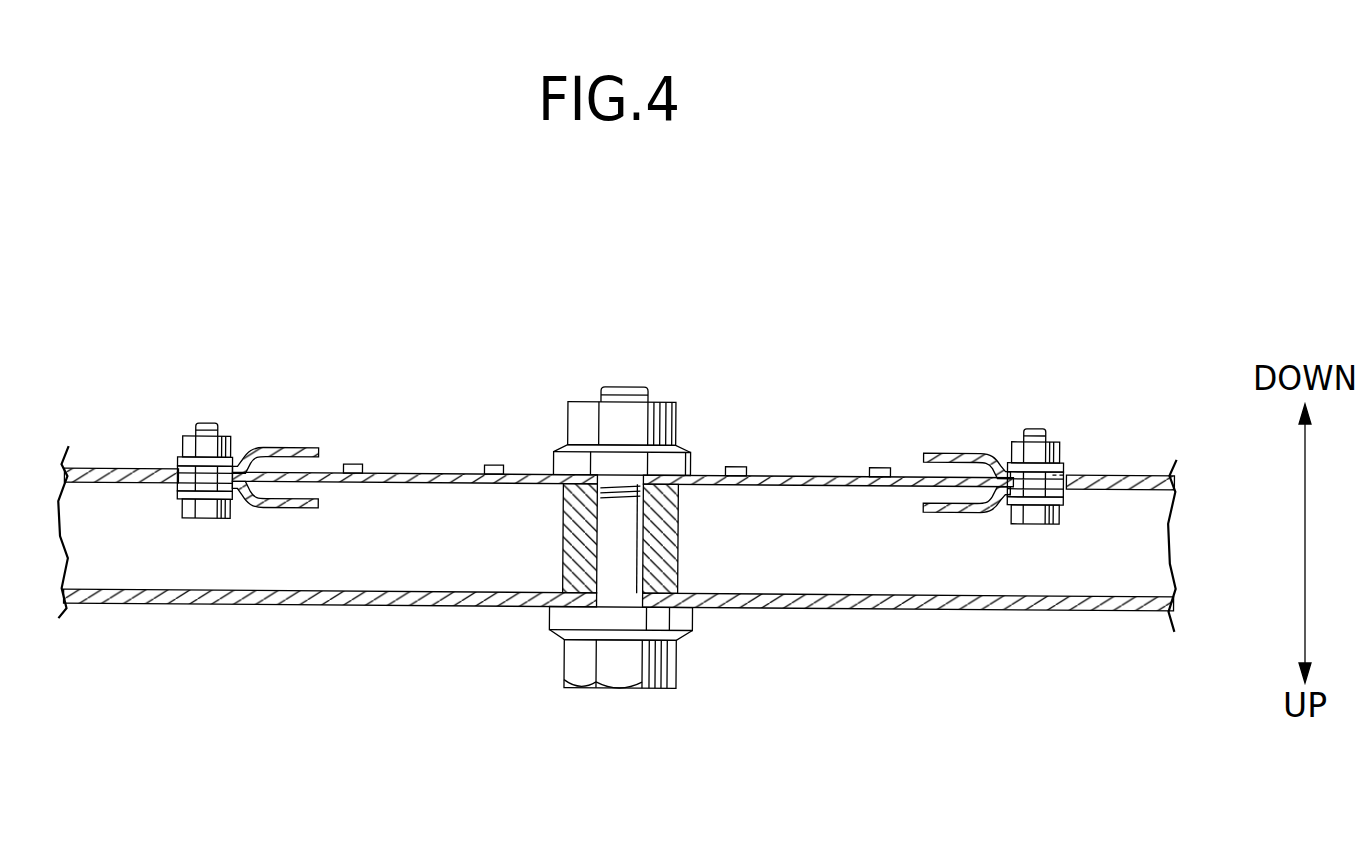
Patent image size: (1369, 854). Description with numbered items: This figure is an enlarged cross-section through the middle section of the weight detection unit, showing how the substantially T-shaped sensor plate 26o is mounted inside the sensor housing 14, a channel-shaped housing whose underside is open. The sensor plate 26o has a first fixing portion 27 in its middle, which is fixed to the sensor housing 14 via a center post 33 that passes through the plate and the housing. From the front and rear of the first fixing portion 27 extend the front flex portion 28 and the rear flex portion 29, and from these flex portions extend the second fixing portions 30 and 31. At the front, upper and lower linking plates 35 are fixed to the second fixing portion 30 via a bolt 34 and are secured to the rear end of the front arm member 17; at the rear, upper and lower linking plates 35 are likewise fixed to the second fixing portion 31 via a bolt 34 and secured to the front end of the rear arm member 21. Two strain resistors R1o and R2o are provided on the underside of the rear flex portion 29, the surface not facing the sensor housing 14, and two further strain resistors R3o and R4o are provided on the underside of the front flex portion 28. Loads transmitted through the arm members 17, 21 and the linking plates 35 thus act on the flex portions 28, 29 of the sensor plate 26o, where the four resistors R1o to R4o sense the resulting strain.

The sensor housing 14 is at (990, 607).
The front arm member 17 is at (1125, 475).
The rear arm member 21 is at (122, 478).
The sensor plate 26o is at (698, 486).
The first fixing portion 27 is at (592, 476).
The front flex portion 28 is at (847, 475).
The rear flex portion 29 is at (380, 475).
The front second fixing portion 30 is at (1058, 514).
The rear second fixing portion 31 is at (184, 514).
The center post 33 is at (563, 550).
The bolt 34 is at (202, 426).
The linking plates 35 is at (300, 510).
The strain resistor R1o is at (493, 466).
The strain resistor R2o is at (352, 466).
The strain resistor R3o is at (735, 466).
The strain resistor R4o is at (880, 465).